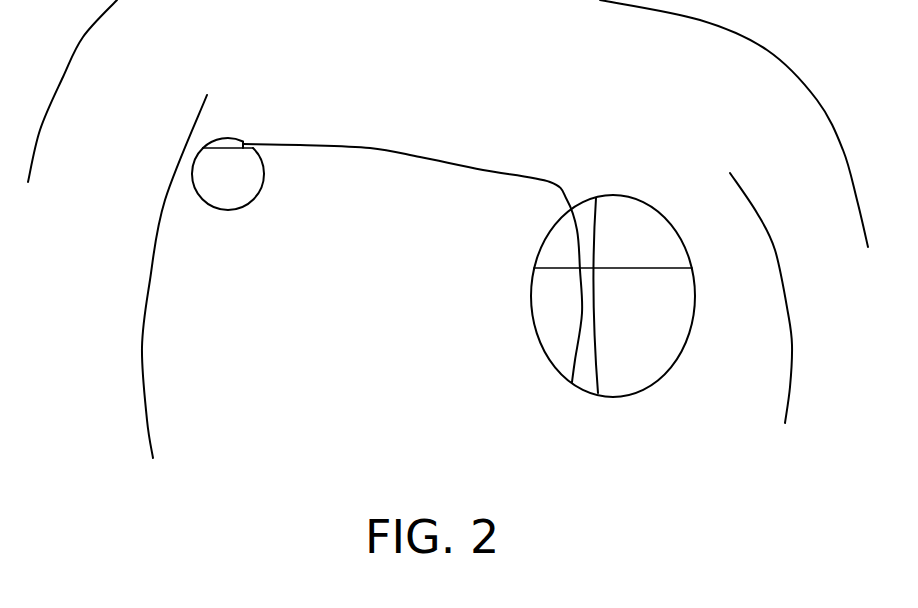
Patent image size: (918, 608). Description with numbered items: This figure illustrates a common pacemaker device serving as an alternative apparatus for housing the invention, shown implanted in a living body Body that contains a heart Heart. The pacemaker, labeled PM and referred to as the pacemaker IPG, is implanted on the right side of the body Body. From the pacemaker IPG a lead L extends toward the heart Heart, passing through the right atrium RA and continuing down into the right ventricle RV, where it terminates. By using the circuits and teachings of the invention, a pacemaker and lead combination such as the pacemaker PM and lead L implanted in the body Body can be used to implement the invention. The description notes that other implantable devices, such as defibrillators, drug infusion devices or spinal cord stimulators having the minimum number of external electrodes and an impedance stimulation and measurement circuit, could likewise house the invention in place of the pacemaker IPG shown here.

The pacemaker PM is at (229, 183).
The pacemaker (implantable pulse generator) IPG is at (228, 218).
The lead L is at (368, 148).
The right atrium RA is at (559, 255).
The right ventricle RV is at (559, 292).
The heart Heart is at (648, 321).
The body Body is at (792, 335).